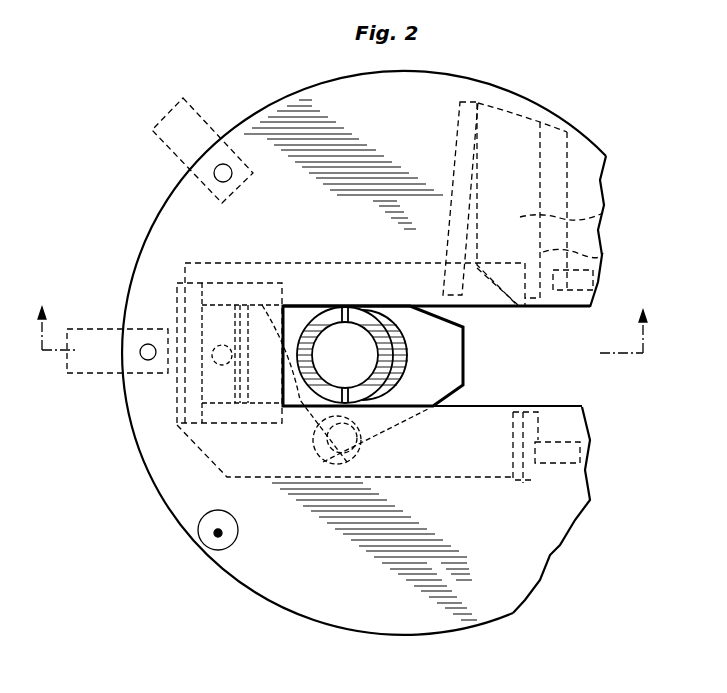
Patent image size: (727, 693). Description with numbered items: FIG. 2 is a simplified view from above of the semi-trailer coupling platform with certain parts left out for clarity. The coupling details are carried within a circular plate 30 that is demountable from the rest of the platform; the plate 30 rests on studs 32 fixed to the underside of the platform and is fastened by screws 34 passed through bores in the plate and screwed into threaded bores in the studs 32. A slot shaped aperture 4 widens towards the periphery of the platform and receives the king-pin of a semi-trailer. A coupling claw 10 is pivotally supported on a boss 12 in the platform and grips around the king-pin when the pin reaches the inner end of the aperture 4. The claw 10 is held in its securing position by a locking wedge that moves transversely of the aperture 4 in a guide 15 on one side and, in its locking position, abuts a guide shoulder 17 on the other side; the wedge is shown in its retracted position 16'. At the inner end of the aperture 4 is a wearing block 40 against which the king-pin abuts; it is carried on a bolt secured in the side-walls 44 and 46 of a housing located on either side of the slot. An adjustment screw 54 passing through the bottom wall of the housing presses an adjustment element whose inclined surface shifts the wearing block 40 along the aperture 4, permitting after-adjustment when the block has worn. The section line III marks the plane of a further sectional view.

The circular plate 30 is at (322, 96).
The studs 32 is at (178, 138).
The screws 34 is at (198, 527).
The side-wall 44 is at (233, 295).
The side-wall 46 is at (232, 412).
The adjustment screw 54 is at (216, 360).
The coupling claw 10 is at (456, 346).
The wearing block 40 is at (320, 306).
The boss 12 is at (338, 440).
The retracted position of locking wedge 16' is at (546, 203).
The guide 15 is at (603, 253).
The guide shoulder 17 is at (532, 472).
The slot shaped aperture 4 is at (558, 307).
The section line III is at (343, 319).